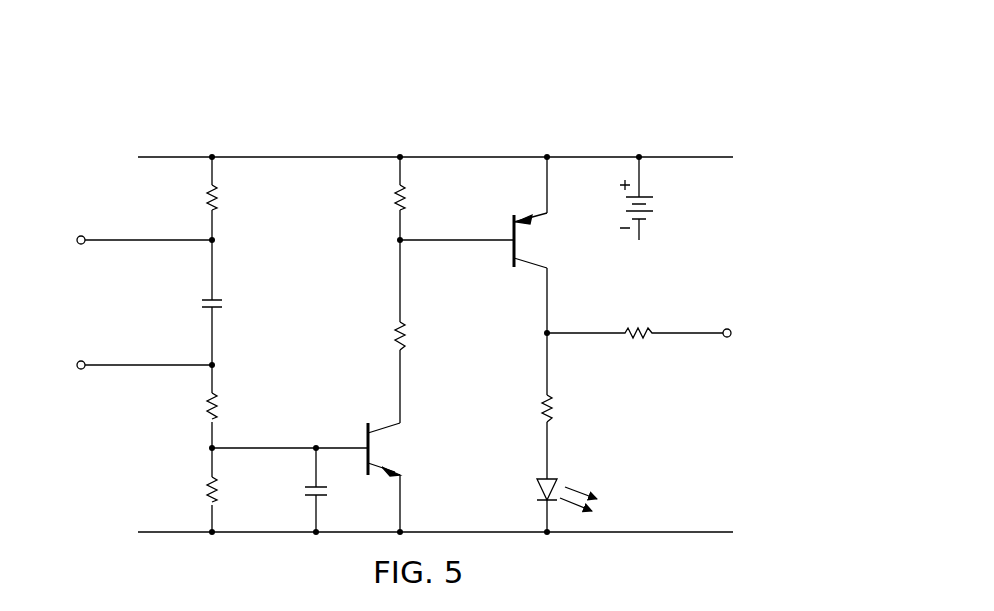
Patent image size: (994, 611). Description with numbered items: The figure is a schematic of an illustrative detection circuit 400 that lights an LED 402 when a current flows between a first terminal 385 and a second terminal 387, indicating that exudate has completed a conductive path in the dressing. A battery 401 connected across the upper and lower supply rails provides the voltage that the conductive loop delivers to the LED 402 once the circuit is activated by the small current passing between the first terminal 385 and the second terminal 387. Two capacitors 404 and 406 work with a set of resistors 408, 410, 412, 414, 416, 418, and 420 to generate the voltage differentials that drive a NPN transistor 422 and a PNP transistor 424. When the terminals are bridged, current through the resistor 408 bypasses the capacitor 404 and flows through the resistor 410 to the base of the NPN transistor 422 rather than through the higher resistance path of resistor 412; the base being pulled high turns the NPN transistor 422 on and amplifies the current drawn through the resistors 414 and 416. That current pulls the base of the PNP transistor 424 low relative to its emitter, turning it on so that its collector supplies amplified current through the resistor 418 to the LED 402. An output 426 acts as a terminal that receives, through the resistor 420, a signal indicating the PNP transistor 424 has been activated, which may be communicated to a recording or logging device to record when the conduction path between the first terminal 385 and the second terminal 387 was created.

The detection circuit 400 is at (603, 71).
The first terminal 385 is at (82, 235).
The second terminal 387 is at (82, 370).
The battery 401 is at (654, 197).
The LED 402 is at (555, 476).
The capacitor 404 is at (202, 304).
The capacitor 406 is at (305, 489).
The resistor 408 is at (208, 196).
The resistor 410 is at (208, 403).
The resistor 412 is at (208, 488).
The resistor 414 is at (396, 196).
The resistor 416 is at (396, 332).
The resistor 418 is at (543, 404).
The resistor 420 is at (637, 340).
The NPN transistor 422 is at (366, 427).
The PNP transistor 424 is at (515, 218).
The output 426 is at (728, 338).